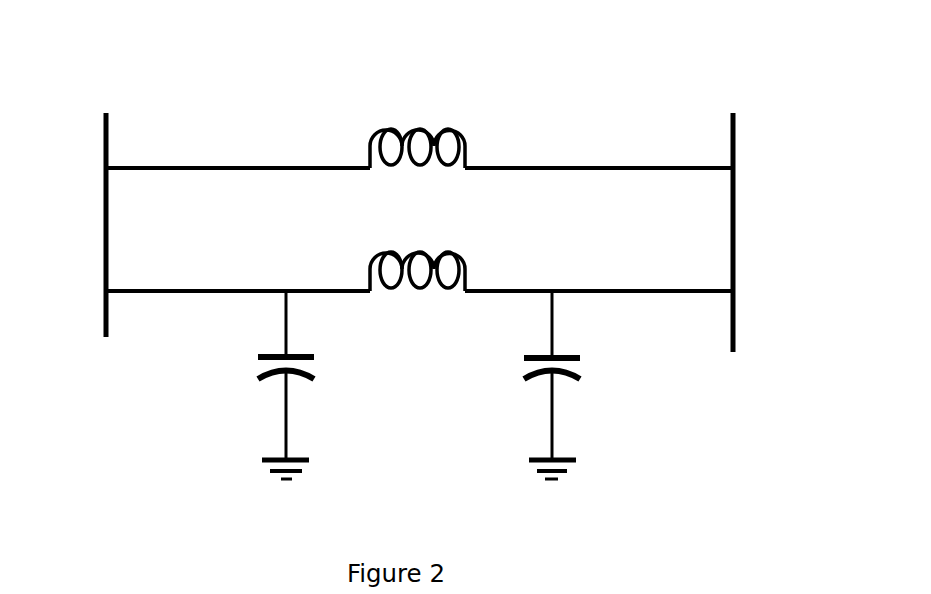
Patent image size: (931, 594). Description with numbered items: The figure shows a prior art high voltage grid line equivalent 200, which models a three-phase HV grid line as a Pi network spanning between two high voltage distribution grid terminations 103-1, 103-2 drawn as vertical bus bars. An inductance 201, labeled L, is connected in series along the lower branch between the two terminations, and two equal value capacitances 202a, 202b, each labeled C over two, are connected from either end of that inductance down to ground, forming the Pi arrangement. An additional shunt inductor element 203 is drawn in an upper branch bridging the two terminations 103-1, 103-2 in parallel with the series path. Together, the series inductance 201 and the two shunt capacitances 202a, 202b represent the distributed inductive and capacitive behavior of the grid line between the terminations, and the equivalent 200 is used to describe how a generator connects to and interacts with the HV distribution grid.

The HV grid line equivalent 200 is at (617, 80).
The high voltage distribution grid termination 103-1 is at (103, 215).
The high voltage distribution grid termination 103-2 is at (740, 166).
The shunt inductor Lsh 203 is at (372, 128).
The inductance L 201 is at (440, 250).
The capacitance C 202a is at (307, 373).
The capacitance C 202b is at (525, 375).